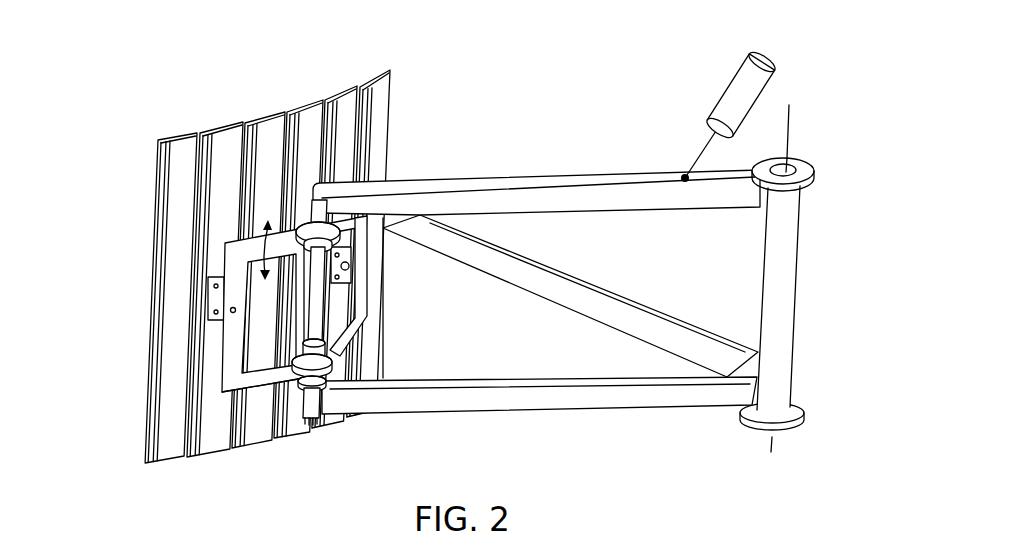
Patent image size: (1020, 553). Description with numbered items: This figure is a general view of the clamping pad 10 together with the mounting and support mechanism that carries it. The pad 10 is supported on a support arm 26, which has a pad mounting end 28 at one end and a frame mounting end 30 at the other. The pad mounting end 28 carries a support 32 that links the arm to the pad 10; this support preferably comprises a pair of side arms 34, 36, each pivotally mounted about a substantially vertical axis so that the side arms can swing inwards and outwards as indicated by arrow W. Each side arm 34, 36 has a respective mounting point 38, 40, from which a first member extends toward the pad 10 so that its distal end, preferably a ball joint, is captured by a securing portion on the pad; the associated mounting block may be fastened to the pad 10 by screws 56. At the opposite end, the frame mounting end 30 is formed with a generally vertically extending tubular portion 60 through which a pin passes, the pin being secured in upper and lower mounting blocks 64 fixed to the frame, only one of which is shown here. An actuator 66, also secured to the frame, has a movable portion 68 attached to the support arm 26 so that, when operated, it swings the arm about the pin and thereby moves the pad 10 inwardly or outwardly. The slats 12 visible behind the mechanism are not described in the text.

The clamping pad 10 is at (118, 152).
The slats 12 is at (176, 148).
The support arm 26 is at (584, 268).
The pad mounting end 28 is at (352, 186).
The frame mounting end 30 is at (797, 308).
The support 32 is at (225, 336).
The side arm 34 is at (247, 385).
The side arm 36 is at (353, 330).
The mounting point 38 is at (212, 300).
The mounting point 40 is at (350, 258).
The screws 56 is at (350, 281).
The tubular portion 60 is at (783, 287).
The mounting block 64 is at (790, 132).
The actuator 66 is at (757, 73).
The movable portion 68 is at (700, 158).
The arrow W is at (262, 250).